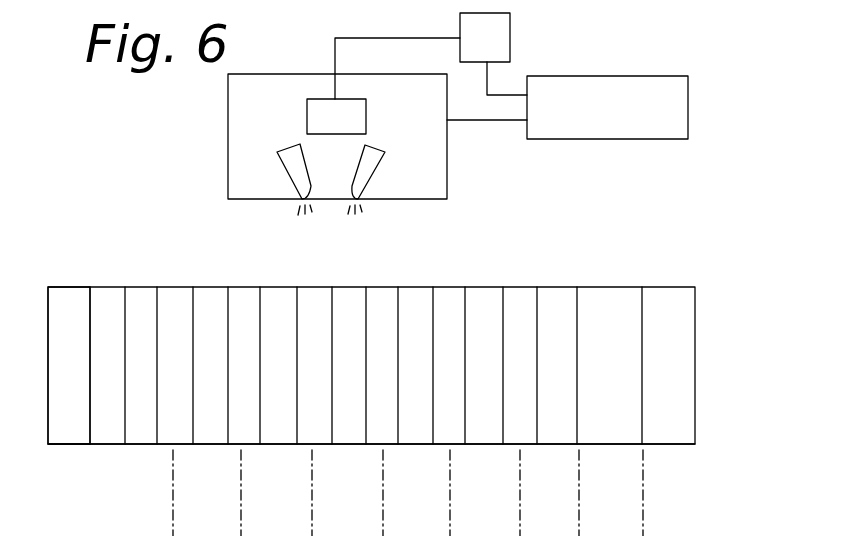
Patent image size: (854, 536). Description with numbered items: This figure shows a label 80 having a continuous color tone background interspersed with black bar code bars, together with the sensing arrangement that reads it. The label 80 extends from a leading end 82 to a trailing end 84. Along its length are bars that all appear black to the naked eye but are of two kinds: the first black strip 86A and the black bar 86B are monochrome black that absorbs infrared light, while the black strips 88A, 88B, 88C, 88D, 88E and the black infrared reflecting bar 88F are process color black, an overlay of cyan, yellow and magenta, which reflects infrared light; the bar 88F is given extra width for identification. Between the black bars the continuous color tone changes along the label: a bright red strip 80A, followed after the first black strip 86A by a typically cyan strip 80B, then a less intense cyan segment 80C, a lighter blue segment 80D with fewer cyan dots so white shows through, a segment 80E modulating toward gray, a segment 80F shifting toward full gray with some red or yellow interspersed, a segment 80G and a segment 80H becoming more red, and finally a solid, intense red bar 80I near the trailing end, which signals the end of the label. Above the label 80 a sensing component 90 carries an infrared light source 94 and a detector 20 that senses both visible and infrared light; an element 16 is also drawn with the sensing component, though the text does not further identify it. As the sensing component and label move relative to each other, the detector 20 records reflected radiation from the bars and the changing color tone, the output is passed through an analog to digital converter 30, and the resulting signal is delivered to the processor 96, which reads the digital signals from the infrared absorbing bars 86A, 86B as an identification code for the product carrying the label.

The light source 16 is at (381, 165).
The detector 20 is at (366, 118).
The analog-to-digital converter 30 is at (510, 38).
The label 80 is at (63, 451).
The bright red strip 80A is at (77, 444).
The continuous color tone strip 80B is at (142, 444).
The continuous color tone segment 80C is at (212, 444).
The continuous color tone segment 80D is at (273, 444).
The continuous color tone segment 80E is at (345, 444).
The continuous color tone segment 80F is at (415, 444).
The continuous color tone segment 80G is at (488, 444).
The continuous color tone segment 80H is at (555, 444).
The solid intense red bar 80I is at (667, 444).
The leading end 82 is at (48, 291).
The trailing end 84 is at (695, 345).
The first black strip 86A is at (107, 284).
The black bar 86B is at (517, 285).
The black strip 88A is at (182, 285).
The black strip 88B is at (243, 285).
The black bar 88C is at (318, 284).
The black bar 88D is at (382, 285).
The calibration region E 88E is at (448, 285).
The black infrared reflecting bar 88F is at (615, 287).
The sensing component 90 is at (228, 137).
The infrared light source 94 is at (289, 143).
The processor 96 is at (647, 140).